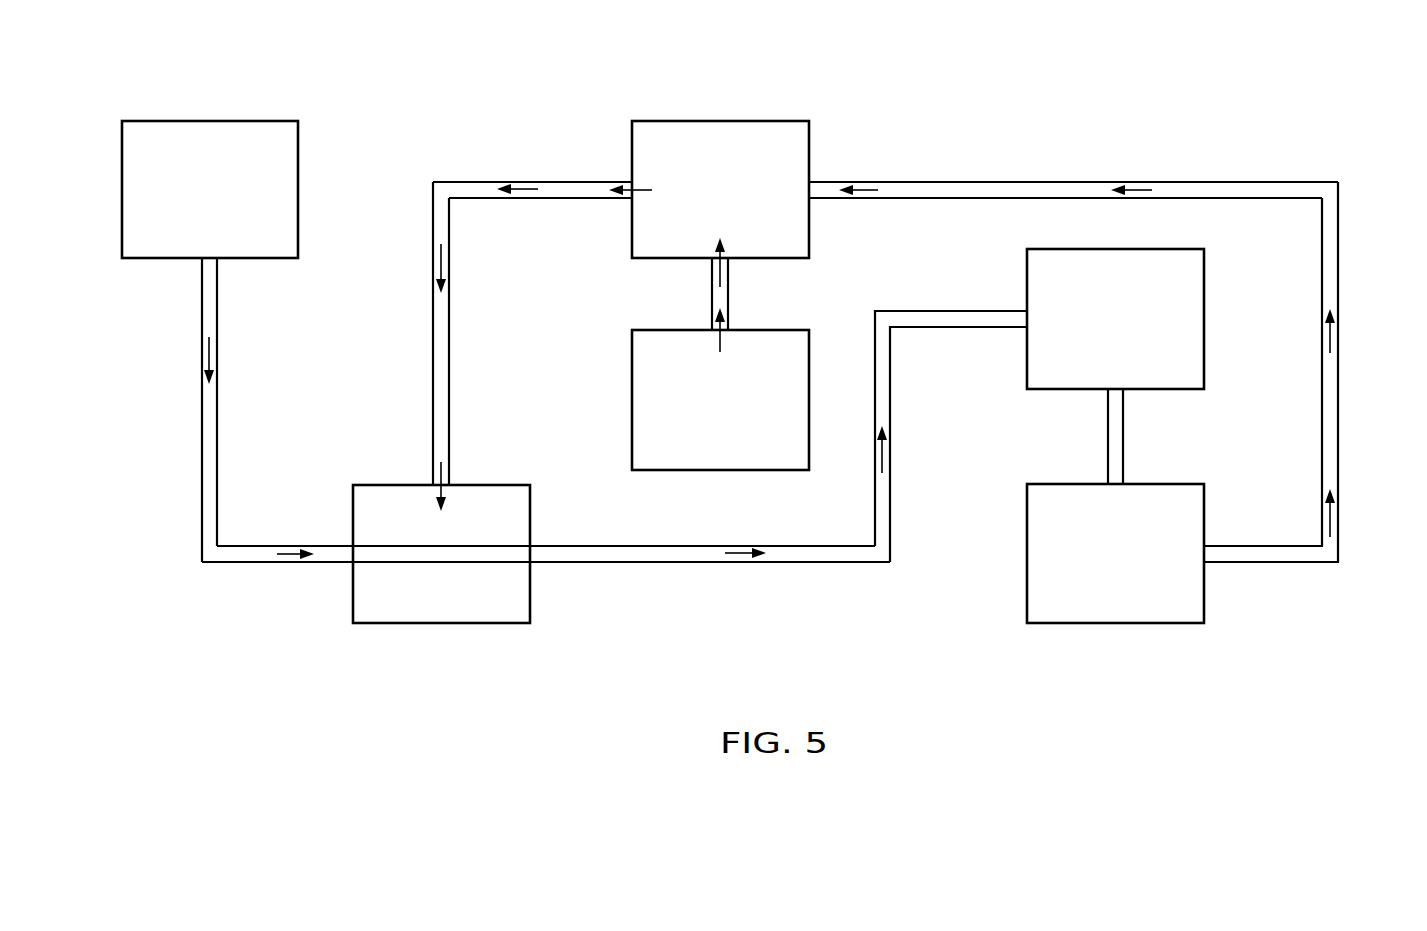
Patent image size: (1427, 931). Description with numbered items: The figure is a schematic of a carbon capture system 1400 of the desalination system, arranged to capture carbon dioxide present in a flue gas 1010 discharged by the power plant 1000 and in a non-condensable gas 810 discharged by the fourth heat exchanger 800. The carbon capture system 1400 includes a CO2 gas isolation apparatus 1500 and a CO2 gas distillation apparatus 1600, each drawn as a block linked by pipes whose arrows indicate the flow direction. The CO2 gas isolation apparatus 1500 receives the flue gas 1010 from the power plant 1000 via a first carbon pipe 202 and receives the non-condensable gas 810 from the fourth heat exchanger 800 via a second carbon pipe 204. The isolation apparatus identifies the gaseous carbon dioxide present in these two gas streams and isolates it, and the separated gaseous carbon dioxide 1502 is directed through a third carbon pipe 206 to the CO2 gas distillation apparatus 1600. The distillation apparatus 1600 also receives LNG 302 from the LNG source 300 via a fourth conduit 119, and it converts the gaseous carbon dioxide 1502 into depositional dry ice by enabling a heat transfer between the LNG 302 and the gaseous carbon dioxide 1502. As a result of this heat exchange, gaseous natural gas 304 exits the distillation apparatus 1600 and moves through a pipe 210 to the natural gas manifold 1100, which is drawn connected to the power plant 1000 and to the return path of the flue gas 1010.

The carbon capture system 1400 is at (1308, 50).
The LNG source 300 is at (298, 187).
The CO2 gas isolation apparatus 1500 is at (809, 137).
The gaseous carbon dioxide 1502 is at (525, 182).
The fourth heat exchanger 800 is at (631, 400).
The non-condensable gas 810 is at (711, 270).
The second carbon pipe 204 is at (728, 292).
The third carbon pipe 206 is at (449, 358).
The natural gas manifold 1100 is at (1204, 318).
The power plant 1000 is at (1027, 553).
The CO2 gas distillation apparatus 1600 is at (530, 588).
The fourth conduit 119 is at (201, 410).
The LNG 302 is at (290, 564).
The gaseous natural gas 304 is at (740, 565).
The pipe 210 is at (851, 565).
The flue gas 1010 is at (1338, 521).
The first carbon pipe 202 is at (1338, 395).